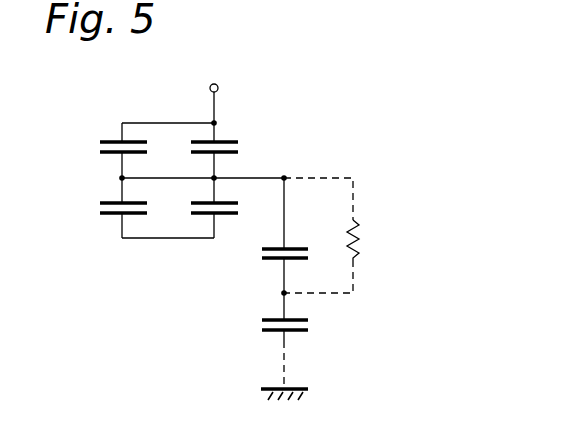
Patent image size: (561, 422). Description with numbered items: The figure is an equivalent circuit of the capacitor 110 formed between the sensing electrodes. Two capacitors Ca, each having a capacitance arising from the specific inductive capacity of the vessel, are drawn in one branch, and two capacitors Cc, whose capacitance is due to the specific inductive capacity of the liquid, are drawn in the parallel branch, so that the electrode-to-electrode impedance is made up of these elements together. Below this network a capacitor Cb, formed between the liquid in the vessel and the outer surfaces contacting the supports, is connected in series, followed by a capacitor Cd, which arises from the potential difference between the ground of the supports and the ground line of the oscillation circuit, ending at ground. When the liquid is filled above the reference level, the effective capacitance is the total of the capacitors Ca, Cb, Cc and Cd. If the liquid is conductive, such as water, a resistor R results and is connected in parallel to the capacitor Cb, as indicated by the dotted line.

The capacitor 110 is at (390, 149).
The capacitor Cc is at (106, 182).
The capacitor Ca is at (235, 182).
The capacitor Cb is at (304, 256).
The capacitor Cd is at (306, 328).
The resistor R is at (332, 235).